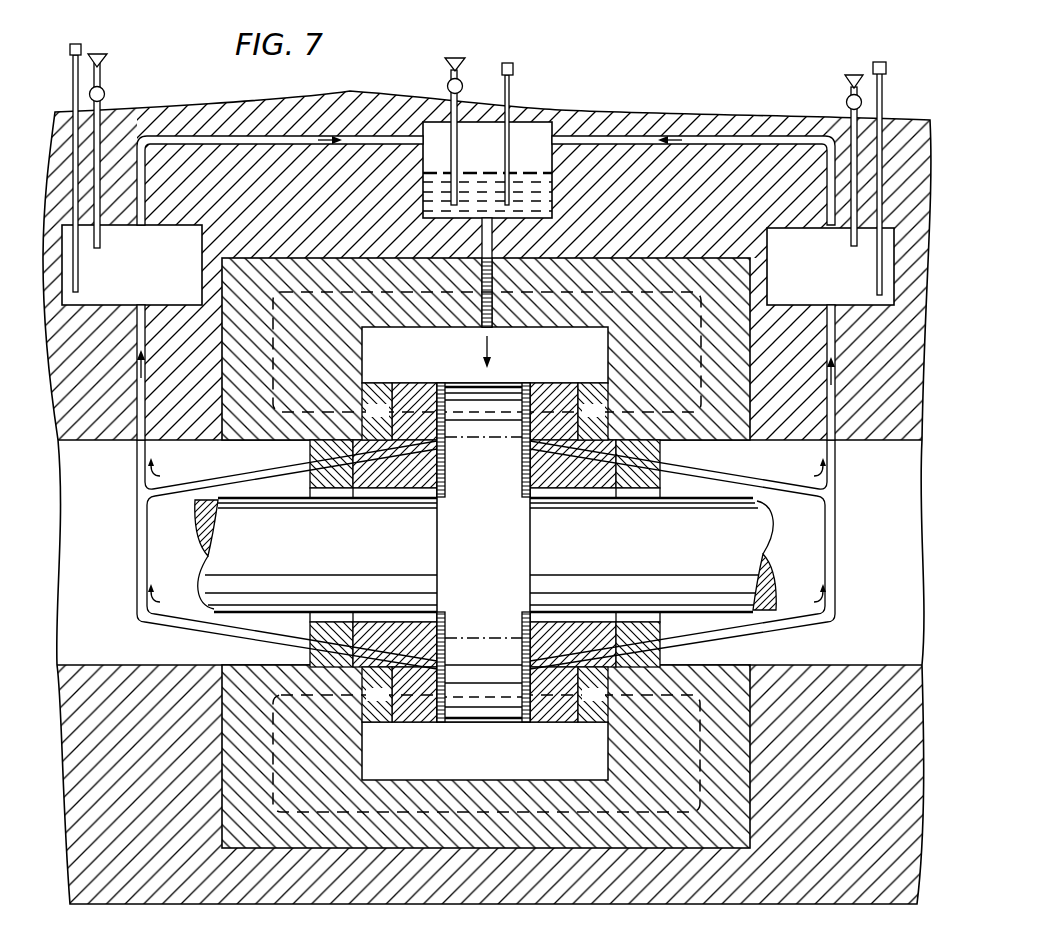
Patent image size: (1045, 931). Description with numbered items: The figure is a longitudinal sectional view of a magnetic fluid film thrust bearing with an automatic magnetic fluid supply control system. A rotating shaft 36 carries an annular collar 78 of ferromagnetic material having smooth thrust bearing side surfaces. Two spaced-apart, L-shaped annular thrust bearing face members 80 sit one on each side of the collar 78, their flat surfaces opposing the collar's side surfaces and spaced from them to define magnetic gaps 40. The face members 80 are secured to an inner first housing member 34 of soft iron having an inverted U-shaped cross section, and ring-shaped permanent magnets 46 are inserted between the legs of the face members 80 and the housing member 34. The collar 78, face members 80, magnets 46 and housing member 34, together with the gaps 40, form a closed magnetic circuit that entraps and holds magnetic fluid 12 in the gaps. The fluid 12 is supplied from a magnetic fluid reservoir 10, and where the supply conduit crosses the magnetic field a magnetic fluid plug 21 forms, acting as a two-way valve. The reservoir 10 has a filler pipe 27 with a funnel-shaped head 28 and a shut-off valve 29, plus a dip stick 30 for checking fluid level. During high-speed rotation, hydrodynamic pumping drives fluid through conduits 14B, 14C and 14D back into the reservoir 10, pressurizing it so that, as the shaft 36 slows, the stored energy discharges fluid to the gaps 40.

The magnetic fluid reservoir 10 is at (180, 223).
The magnetic fluid 12 is at (520, 177).
The conduit 14B is at (183, 632).
The conduit 14C is at (194, 486).
The conduit 14D is at (133, 451).
The magnetic fluid plug 21 is at (487, 327).
The filler pipe 27 is at (142, 101).
The funnel-shaped head 28 is at (110, 57).
The shut-off valve 29 is at (105, 88).
The dip stick 30 is at (72, 83).
The inner first housing member 34 is at (672, 354).
The rotating shaft 36 is at (358, 559).
The magnetic gaps 40 is at (438, 382).
The permanent magnets 46 is at (377, 382).
The annular collar 78 is at (497, 477).
The thrust bearing face members 80 is at (412, 382).